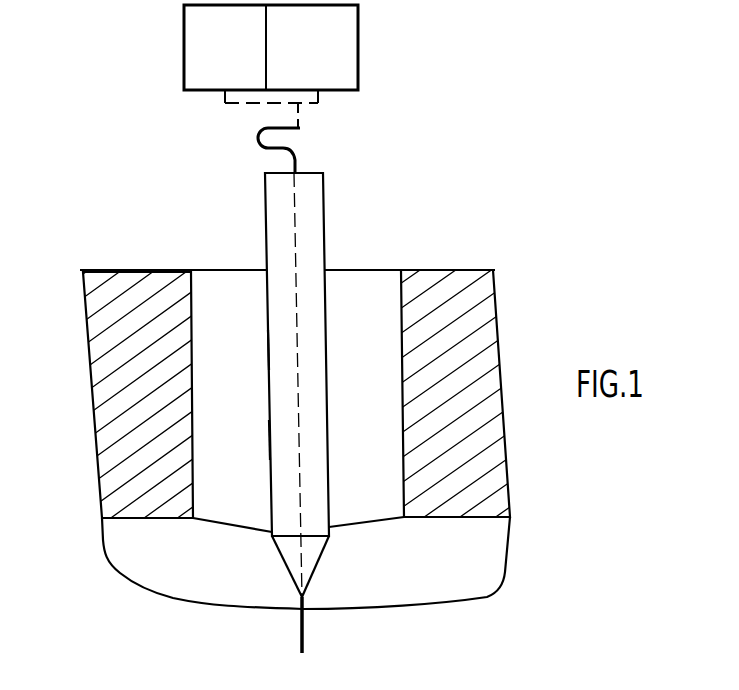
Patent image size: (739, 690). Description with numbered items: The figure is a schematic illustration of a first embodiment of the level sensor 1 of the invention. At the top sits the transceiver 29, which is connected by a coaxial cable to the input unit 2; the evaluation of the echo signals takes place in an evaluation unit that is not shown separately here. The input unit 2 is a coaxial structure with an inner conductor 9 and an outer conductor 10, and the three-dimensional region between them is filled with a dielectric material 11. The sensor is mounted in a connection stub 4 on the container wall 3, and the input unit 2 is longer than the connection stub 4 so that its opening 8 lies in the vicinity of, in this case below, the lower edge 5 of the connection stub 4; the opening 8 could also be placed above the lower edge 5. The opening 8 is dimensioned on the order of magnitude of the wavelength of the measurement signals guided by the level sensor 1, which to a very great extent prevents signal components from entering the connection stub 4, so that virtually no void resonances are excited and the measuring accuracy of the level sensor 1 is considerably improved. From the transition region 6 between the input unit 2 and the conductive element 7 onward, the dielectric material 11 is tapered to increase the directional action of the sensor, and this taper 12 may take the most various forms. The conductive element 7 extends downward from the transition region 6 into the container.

The level sensor 1 is at (403, 172).
The input unit 2 is at (270, 193).
The container wall 3 is at (371, 268).
The connection stub 4 is at (110, 392).
The lower edge 5 is at (183, 522).
The transition region 6 is at (325, 545).
The conductive element 7 is at (305, 637).
The opening 8 is at (280, 530).
The inner conductor 9 is at (298, 405).
The outer conductor 10 is at (269, 442).
The dielectric material 11 is at (280, 349).
The taper 12 is at (293, 562).
The transceiver 29 is at (346, 69).